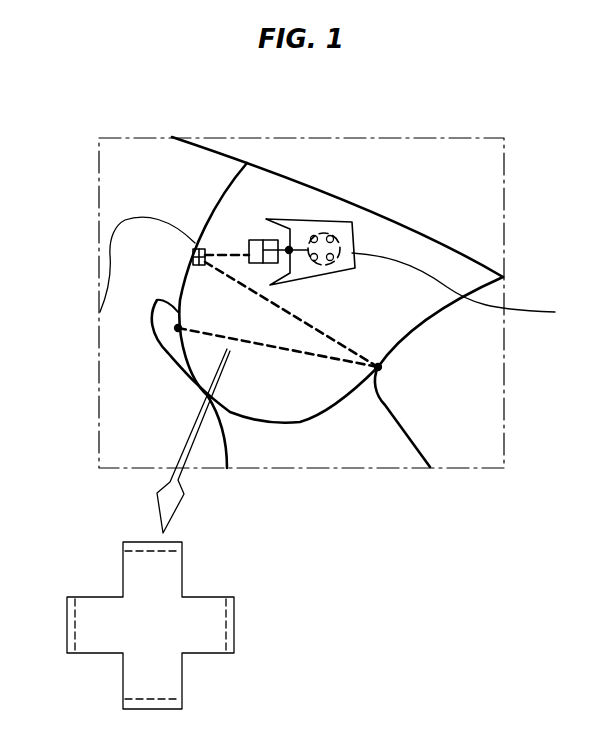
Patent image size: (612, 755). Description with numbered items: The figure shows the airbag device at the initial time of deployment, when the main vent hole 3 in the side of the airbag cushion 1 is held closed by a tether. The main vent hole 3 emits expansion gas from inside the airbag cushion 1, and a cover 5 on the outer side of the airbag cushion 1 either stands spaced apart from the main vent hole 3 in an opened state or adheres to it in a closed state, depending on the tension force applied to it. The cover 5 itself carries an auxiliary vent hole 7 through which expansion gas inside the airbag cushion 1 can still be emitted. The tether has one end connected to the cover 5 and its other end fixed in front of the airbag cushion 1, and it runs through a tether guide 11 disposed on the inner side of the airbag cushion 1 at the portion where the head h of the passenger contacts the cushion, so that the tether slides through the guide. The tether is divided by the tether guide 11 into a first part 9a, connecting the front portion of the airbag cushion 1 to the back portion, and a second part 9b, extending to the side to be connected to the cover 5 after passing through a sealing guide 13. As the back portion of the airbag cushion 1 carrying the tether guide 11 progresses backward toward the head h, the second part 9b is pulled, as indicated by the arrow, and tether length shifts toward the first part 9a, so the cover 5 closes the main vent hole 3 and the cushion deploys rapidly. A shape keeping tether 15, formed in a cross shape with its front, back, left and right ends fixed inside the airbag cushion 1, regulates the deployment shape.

The airbag cushion 1 is at (446, 250).
The main vent hole 3 is at (325, 232).
The cover 5 is at (462, 360).
The auxiliary vent hole 7 is at (335, 232).
The first part 9a is at (313, 327).
The second part 9b is at (225, 252).
The tether guide 11 is at (192, 264).
The sealing guide 13 is at (254, 238).
The shape keeping tether 15 is at (213, 334).
The head h is at (118, 220).